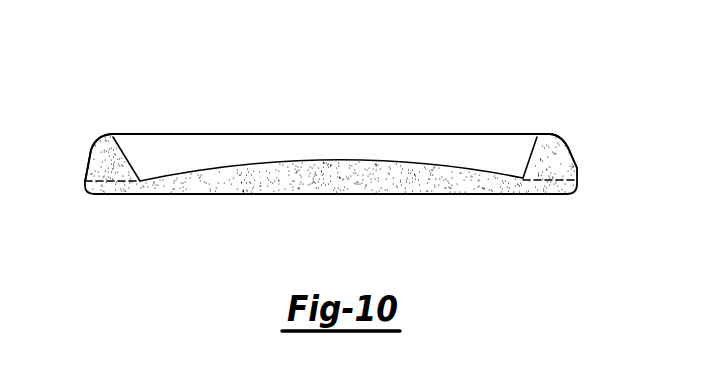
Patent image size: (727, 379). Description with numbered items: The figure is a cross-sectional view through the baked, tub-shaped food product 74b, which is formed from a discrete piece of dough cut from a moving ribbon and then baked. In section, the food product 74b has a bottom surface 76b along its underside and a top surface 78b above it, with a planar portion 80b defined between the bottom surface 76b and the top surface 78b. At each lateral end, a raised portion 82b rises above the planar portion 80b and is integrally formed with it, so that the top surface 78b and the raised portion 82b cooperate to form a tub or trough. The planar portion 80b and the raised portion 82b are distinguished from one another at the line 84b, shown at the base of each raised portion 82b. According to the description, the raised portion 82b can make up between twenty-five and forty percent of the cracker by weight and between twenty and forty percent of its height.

The food product 74b is at (463, 75).
The bottom surface 76b is at (478, 196).
The top surface 78b is at (352, 163).
The planar portion 80b is at (355, 183).
The raised portion 82b is at (553, 149).
The line 84b is at (570, 228).